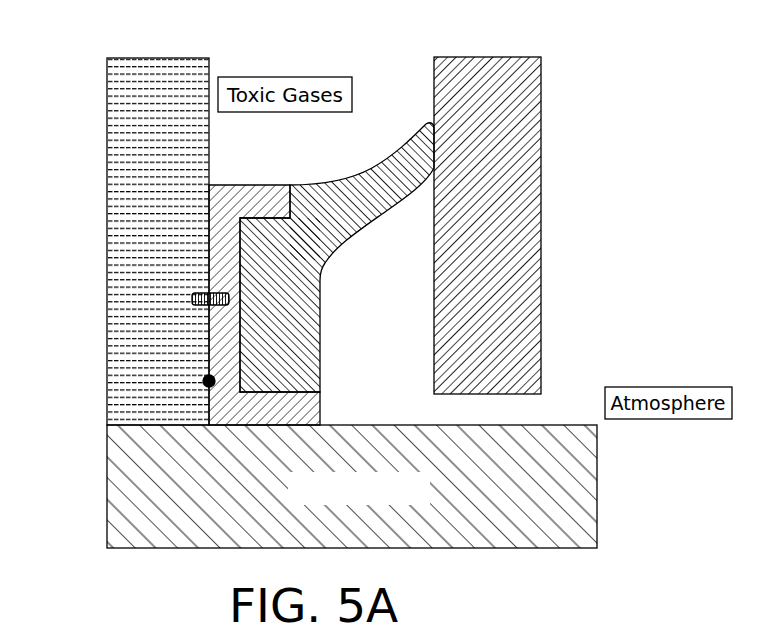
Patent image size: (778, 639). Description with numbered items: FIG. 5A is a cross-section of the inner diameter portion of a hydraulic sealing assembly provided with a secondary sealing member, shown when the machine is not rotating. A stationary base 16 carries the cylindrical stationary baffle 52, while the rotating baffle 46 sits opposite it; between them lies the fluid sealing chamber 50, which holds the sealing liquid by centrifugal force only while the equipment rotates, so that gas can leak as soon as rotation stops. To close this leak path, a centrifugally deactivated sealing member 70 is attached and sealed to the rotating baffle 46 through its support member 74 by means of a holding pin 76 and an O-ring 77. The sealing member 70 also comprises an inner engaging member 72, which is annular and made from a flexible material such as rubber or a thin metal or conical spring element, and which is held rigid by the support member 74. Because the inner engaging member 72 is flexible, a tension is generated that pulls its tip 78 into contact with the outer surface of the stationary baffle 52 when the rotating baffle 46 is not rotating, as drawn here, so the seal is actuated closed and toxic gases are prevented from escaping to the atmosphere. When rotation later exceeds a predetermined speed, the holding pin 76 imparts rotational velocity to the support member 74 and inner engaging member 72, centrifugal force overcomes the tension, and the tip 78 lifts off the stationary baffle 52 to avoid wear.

The stationary housing 16 is at (563, 500).
The rotating baffle 46 is at (118, 241).
The fluid sealing chamber 50 is at (382, 322).
The stationary baffle 52 is at (541, 219).
The centrifugally deactivated sealing member 70 is at (362, 170).
The inner engaging member 72 is at (258, 348).
The support member 74 is at (234, 208).
The holding pin 76 is at (192, 298).
The O-ring 77 is at (204, 384).
The tip 78 is at (423, 149).